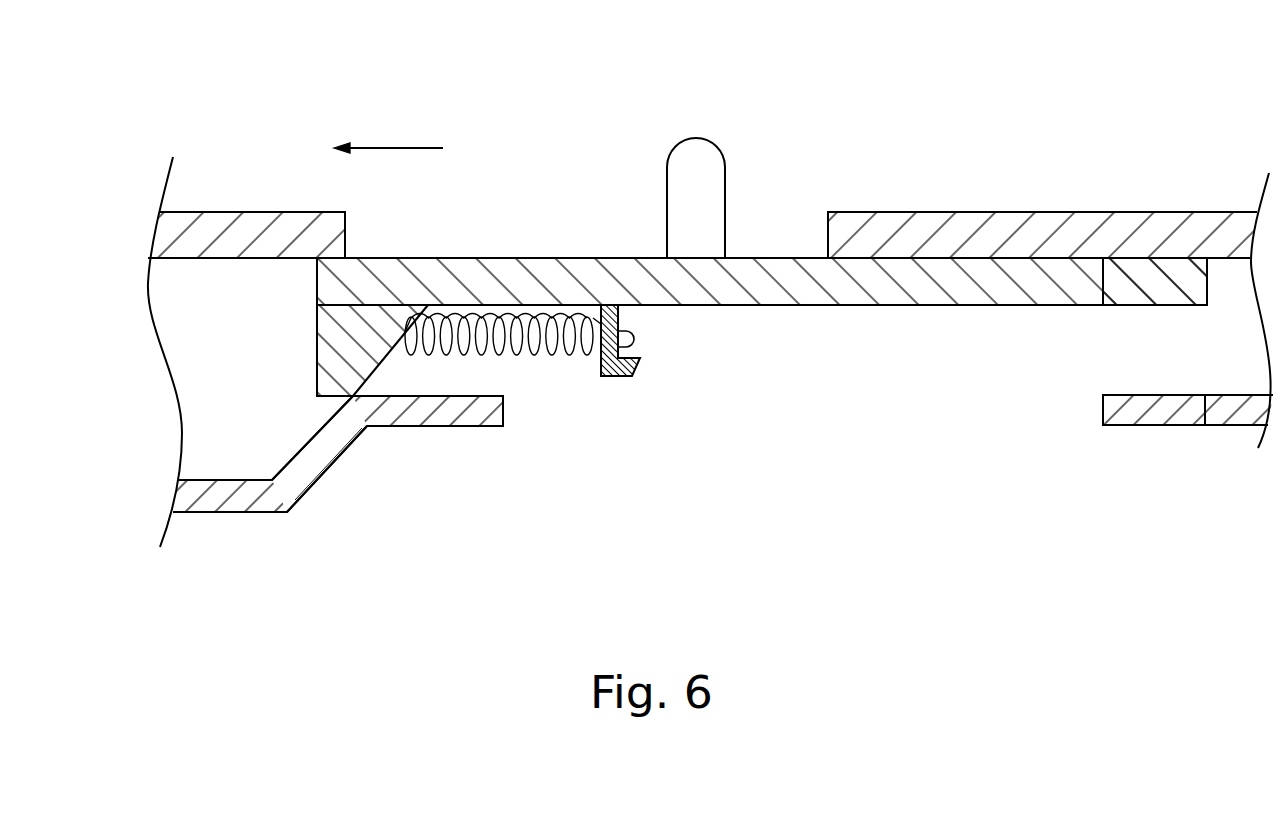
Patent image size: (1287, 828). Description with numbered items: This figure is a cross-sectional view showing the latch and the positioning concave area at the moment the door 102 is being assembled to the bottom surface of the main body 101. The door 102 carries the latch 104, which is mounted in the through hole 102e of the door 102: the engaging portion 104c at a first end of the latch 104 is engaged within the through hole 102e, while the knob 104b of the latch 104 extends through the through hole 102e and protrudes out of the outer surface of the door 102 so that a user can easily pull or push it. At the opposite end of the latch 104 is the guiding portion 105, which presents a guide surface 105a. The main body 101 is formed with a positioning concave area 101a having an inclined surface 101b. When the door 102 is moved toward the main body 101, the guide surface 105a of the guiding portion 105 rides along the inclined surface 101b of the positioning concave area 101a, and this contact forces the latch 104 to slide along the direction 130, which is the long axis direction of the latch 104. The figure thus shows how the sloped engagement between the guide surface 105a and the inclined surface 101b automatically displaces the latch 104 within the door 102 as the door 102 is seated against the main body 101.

The main body 101 is at (197, 497).
The positioning concave area 101a is at (735, 440).
The inclined surface 101b is at (298, 444).
The door 102 is at (236, 225).
The through hole 102e is at (541, 190).
The latch 104 is at (945, 272).
The knob 104b is at (696, 160).
The engaging portion 104c is at (1150, 272).
The guiding portion 105 is at (342, 340).
The guide surface 105a is at (373, 372).
The direction 130 is at (395, 145).